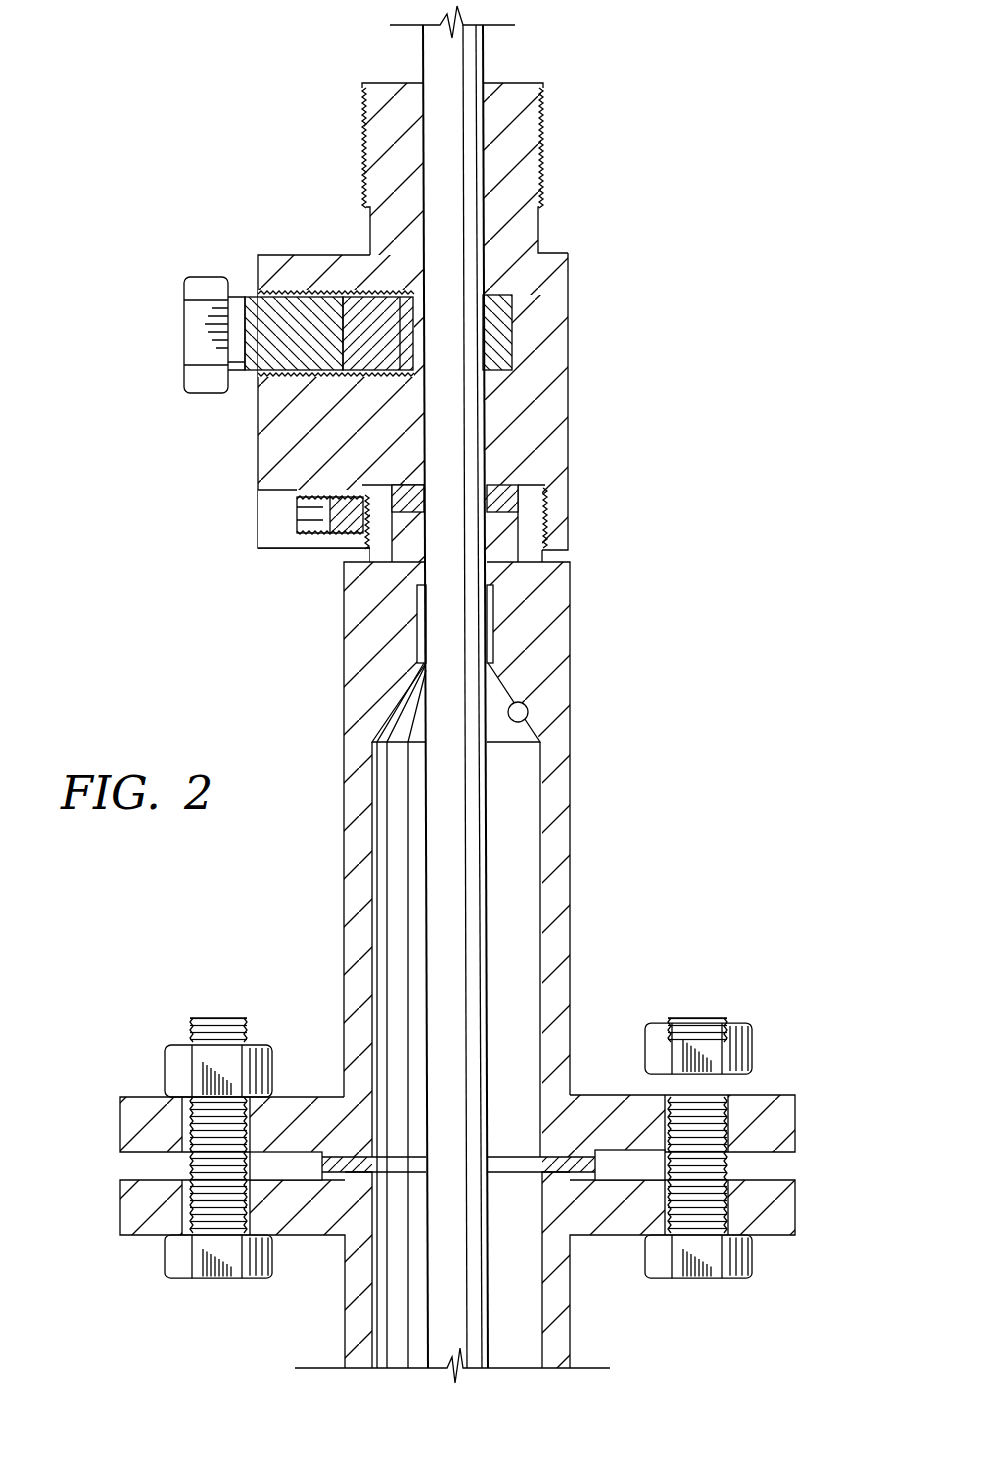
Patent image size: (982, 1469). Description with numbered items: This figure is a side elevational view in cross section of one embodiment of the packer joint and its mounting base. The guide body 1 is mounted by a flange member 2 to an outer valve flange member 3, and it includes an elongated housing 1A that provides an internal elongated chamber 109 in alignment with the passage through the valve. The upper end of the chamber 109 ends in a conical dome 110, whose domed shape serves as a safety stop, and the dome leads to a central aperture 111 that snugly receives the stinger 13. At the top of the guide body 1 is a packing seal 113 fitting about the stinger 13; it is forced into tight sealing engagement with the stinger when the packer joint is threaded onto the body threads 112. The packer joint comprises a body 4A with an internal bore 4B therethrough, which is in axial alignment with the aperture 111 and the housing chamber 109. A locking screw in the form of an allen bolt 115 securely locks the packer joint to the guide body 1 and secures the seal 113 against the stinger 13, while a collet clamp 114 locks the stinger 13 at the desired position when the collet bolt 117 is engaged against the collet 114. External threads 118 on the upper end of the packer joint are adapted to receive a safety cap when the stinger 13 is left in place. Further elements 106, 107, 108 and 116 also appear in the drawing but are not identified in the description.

The guide body 1 is at (462, 965).
The elongated housing 1A is at (569, 900).
The flange member 2 is at (797, 1118).
The outer valve flange member 3 is at (797, 1210).
The body 4A is at (570, 385).
The internal bore 4B is at (485, 266).
The stinger 13 is at (472, 972).
The stud bolt 106 is at (205, 1165).
The gasket 107 is at (727, 1163).
The nut 108 is at (174, 1068).
The elongated chamber 109 is at (513, 848).
The conical dome 110 is at (530, 725).
The central aperture 111 is at (492, 630).
The internal threads 112 is at (548, 512).
The packing seal 113 is at (512, 478).
The collet clamp 114 is at (513, 332).
The allen bolt 115 is at (330, 540).
The set screw 116 is at (310, 517).
The collet bolt 117 is at (207, 288).
The external threads 118 is at (543, 125).